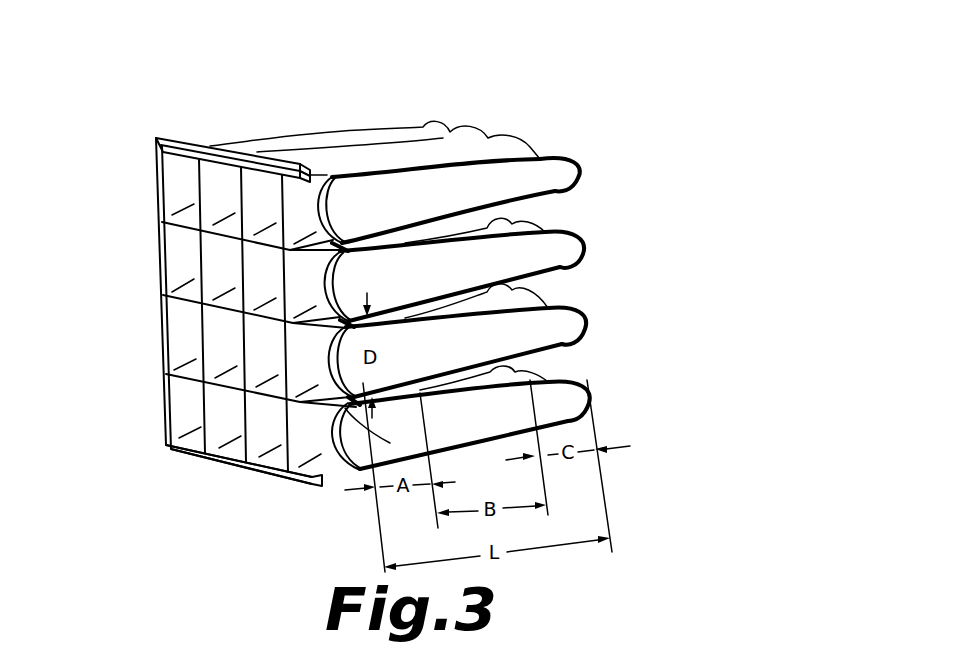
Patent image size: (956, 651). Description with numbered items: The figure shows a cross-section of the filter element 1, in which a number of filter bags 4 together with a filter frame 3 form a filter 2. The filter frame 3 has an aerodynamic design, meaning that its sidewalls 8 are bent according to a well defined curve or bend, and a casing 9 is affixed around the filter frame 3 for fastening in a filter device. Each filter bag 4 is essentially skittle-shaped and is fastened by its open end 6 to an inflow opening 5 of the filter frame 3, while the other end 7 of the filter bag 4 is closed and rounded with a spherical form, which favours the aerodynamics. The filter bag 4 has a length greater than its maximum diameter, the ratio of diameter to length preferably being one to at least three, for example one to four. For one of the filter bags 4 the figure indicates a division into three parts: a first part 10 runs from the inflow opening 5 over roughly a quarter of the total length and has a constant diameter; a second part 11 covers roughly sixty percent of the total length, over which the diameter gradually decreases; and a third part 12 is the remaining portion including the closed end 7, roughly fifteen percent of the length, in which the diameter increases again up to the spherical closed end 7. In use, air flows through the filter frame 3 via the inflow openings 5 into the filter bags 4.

The filter element 1 is at (127, 83).
The filter 2 is at (430, 105).
The filter frame 3 is at (306, 440).
The filter bag 4 is at (365, 172).
The inflow opening 5 is at (338, 362).
The open end 6 is at (352, 466).
The closed end 7 is at (580, 236).
The sidewall 8 is at (278, 458).
The casing 9 is at (156, 141).
The first part 10 is at (345, 408).
The second part 11 is at (481, 407).
The third part 12 is at (593, 406).